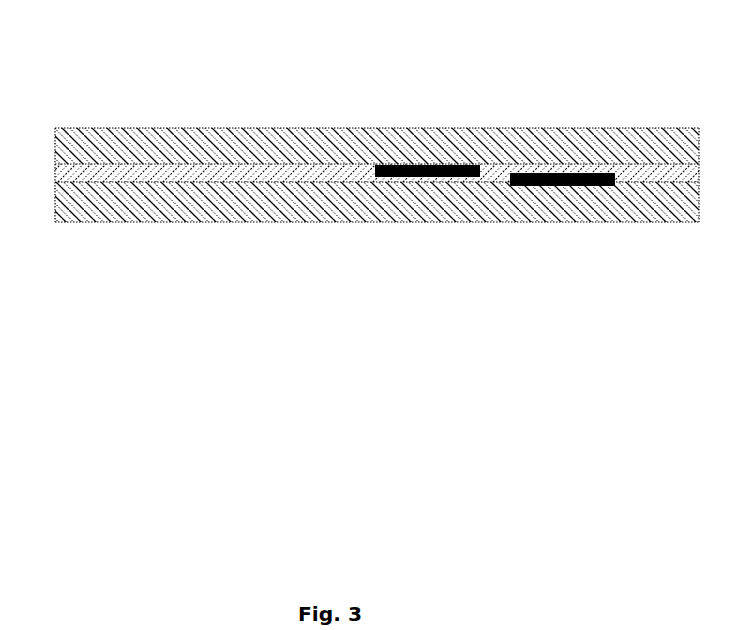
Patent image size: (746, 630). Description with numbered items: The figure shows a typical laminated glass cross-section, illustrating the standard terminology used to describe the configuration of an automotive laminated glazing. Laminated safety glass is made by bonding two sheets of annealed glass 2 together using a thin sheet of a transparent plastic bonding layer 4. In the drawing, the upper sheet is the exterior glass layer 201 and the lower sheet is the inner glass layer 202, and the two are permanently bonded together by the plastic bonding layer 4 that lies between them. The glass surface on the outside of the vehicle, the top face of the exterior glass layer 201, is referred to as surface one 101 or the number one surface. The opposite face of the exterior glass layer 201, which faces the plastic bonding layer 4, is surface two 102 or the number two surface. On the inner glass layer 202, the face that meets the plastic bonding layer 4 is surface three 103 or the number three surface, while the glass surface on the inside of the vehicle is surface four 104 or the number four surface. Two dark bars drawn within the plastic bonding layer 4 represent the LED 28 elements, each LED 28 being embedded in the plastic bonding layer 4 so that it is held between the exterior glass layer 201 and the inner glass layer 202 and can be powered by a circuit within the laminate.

The annealed glass 2 is at (658, 127).
The plastic bonding layer 4 is at (135, 176).
The LED 28 is at (425, 156).
The surface one 101 is at (196, 127).
The surface two 102 is at (338, 164).
The surface three 103 is at (188, 186).
The surface four 104 is at (252, 222).
The exterior glass layer 201 is at (51, 152).
The inner glass layer 202 is at (51, 203).